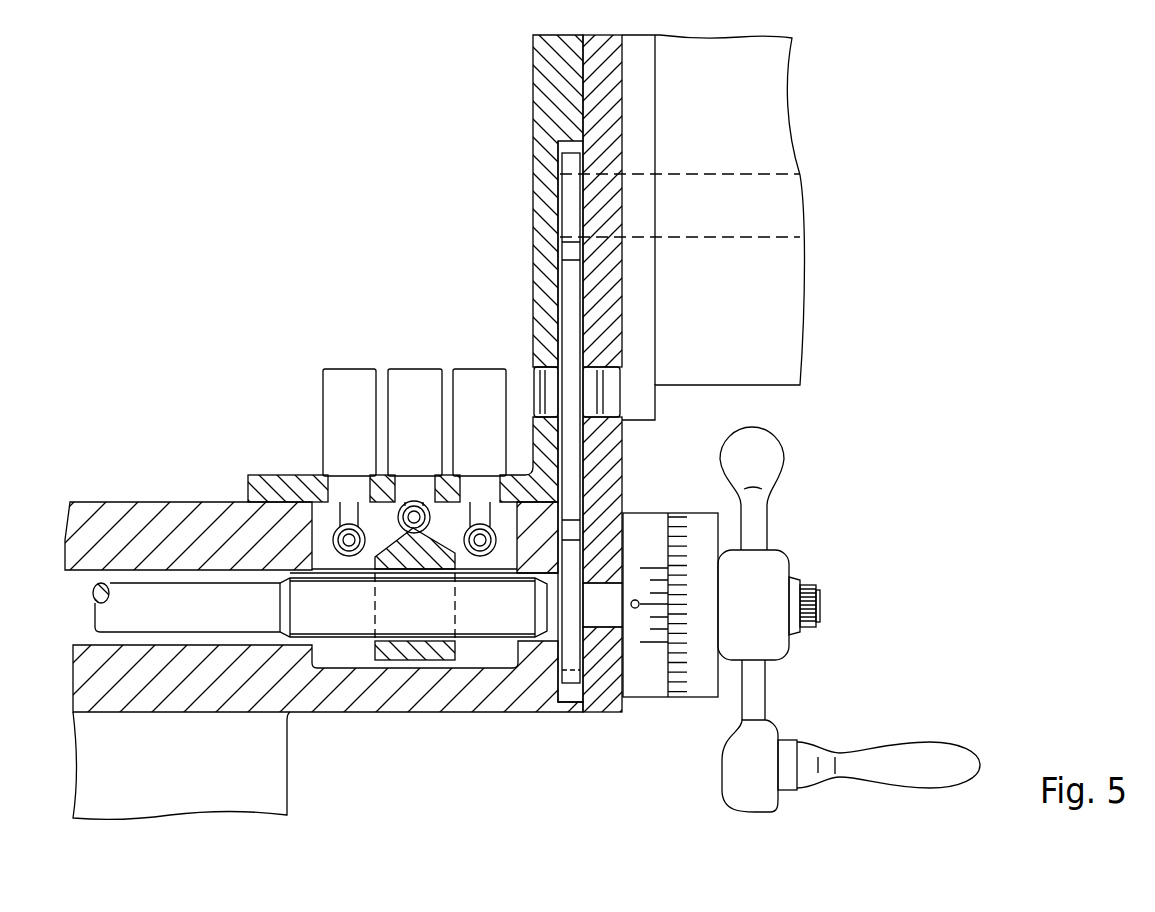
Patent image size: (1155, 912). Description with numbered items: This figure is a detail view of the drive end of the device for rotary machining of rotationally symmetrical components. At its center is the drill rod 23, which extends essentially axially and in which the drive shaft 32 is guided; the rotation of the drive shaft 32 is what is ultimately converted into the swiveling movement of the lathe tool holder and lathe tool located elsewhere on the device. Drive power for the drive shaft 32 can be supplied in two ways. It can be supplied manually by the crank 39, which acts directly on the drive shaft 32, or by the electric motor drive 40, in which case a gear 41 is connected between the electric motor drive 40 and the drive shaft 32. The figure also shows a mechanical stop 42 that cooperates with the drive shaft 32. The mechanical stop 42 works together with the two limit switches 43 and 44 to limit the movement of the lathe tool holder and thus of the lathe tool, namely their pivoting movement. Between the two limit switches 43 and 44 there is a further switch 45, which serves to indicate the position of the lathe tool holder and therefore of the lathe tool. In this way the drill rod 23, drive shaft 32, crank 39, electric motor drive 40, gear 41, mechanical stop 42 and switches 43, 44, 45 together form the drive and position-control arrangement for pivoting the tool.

The drill rod 23 is at (112, 520).
The drive shaft 32 is at (170, 597).
The crank 39 is at (757, 528).
The electric motor drive 40 is at (773, 150).
The gear 41 is at (570, 304).
The mechanical stop 42 is at (457, 647).
The limit switch 43 is at (347, 377).
The limit switch 44 is at (479, 377).
The switch 45 is at (414, 377).